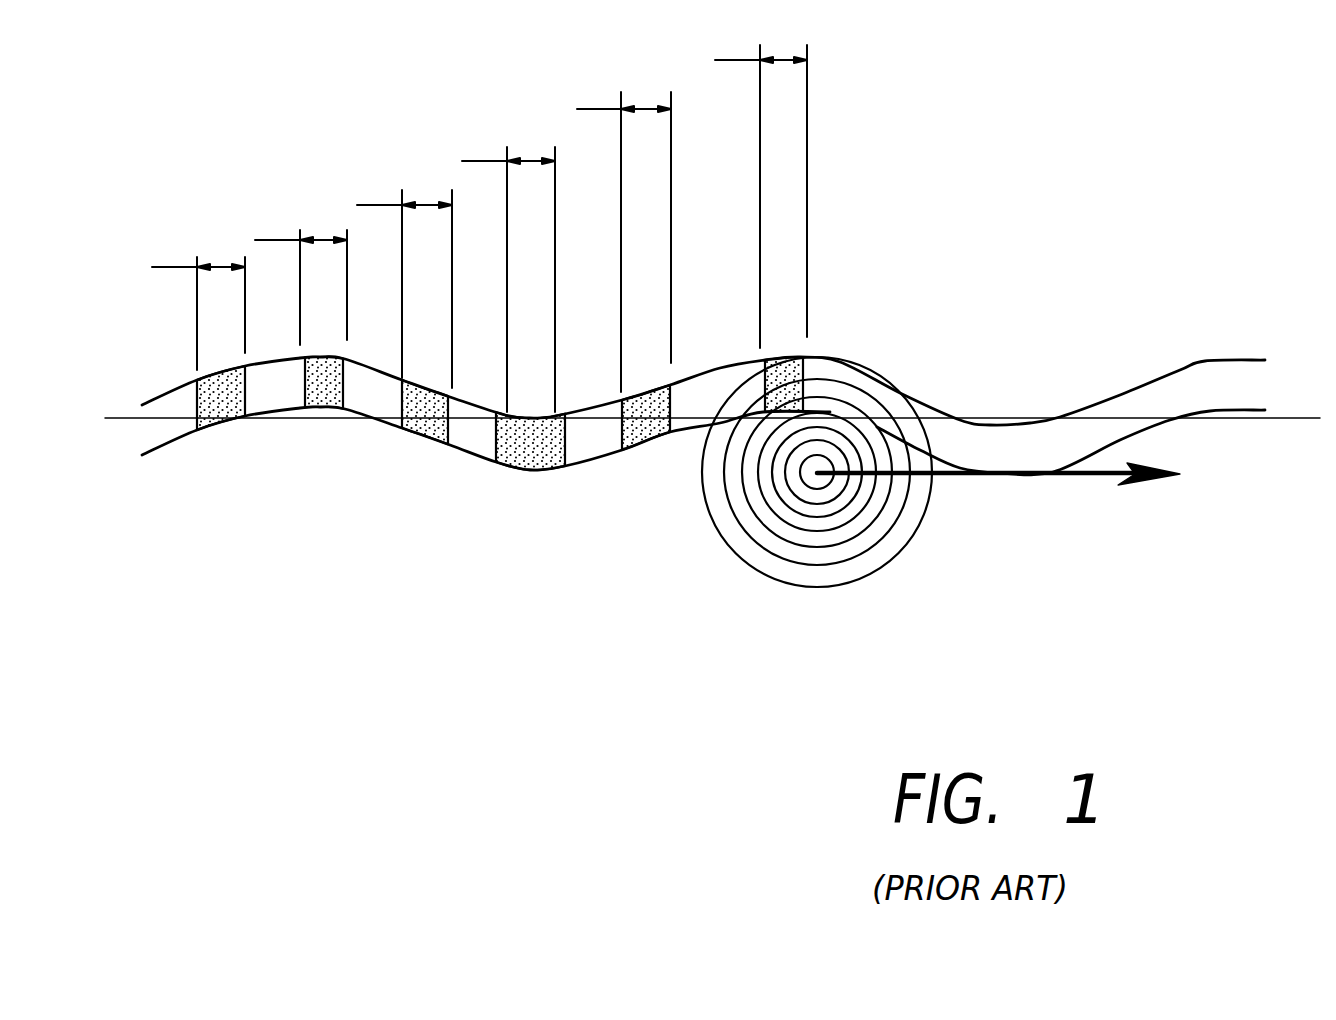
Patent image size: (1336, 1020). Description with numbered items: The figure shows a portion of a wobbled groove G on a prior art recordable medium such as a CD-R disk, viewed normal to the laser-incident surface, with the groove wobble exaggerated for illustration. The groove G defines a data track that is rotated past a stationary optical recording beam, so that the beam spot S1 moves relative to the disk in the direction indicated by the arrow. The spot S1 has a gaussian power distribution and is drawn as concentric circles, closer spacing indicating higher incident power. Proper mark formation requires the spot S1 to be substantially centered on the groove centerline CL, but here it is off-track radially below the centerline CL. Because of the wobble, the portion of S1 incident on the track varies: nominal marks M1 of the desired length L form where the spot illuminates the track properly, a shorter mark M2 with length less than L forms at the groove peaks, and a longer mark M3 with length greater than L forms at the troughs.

The nominal mark M1 is at (222, 410).
The shorter mark M2 is at (325, 395).
The longer mark M3 is at (530, 450).
The desired mark length L is at (464, 228).
The spot of optical recording beam S1 is at (763, 575).
The wobbled groove G is at (1218, 378).
The groove centerline CL is at (1297, 420).